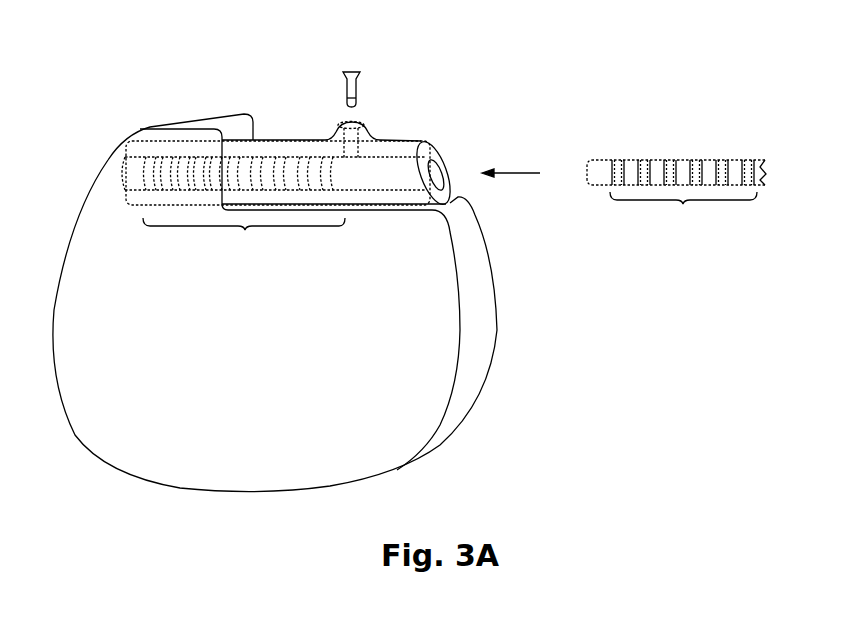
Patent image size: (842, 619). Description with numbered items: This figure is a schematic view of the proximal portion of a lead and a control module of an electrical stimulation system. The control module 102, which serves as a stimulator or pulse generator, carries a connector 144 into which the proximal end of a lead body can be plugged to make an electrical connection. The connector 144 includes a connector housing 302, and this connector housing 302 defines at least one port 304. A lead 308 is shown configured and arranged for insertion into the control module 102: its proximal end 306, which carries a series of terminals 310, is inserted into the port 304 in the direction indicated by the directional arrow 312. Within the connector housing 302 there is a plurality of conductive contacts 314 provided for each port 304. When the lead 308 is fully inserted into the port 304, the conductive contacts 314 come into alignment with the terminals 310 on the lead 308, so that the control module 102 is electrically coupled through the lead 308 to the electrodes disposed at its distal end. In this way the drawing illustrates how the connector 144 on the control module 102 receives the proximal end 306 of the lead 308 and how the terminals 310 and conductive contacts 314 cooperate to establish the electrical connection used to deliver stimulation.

The control module 102 is at (103, 118).
The connector 144 is at (281, 140).
The connector housing 302 is at (159, 145).
The port 304 is at (447, 157).
The proximal end 306 is at (654, 143).
The lead 308 is at (703, 158).
The terminals 310 is at (683, 210).
The directional arrow 312 is at (518, 173).
The conductive contacts 314 is at (244, 235).